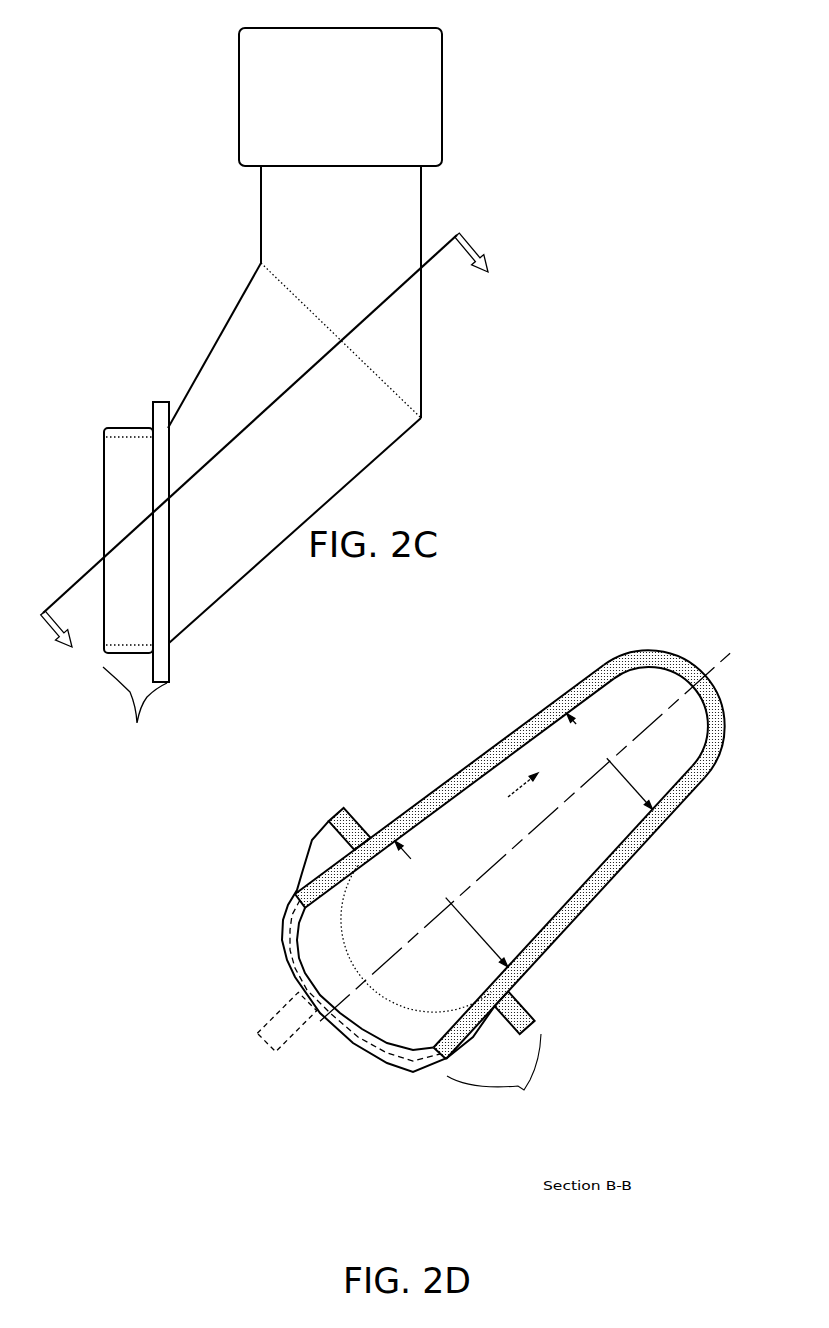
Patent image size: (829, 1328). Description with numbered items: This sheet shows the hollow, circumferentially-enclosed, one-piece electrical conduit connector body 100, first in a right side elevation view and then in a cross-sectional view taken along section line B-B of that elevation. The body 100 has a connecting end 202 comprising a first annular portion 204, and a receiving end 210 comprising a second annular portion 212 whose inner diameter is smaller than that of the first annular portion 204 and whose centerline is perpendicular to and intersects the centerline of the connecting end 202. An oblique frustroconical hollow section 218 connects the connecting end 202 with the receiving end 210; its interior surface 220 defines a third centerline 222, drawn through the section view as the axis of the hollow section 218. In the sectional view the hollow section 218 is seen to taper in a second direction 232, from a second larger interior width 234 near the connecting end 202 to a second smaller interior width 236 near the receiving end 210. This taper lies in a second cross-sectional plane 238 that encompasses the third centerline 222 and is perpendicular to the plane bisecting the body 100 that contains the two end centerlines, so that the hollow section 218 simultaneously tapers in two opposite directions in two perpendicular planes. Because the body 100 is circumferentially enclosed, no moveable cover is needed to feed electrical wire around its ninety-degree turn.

In FIG. 2C, the electrical conduit connector body 100 is at (622, 225).
In FIG. 2C, the second annular portion 212 is at (270, 72).
In FIG. 2C, the receiving end 210 is at (300, 222).
In FIG. 2D, the receiving end 210 is at (628, 648).
In FIG. 2C, the oblique frustroconical hollow section 218 is at (245, 360).
In FIG. 2D, the oblique frustroconical hollow section 218 is at (490, 753).
In FIG. 2C, the first annular portion 204 is at (128, 450).
In FIG. 2D, the first annular portion 204 is at (318, 876).
In FIG. 2C, the connecting end 202 is at (136, 578).
In FIG. 2D, the connecting end 202 is at (442, 966).
In FIG. 2D, the interior surface 220 is at (555, 883).
In FIG. 2D, the third centerline 222 is at (297, 1044).
In FIG. 2D, the second direction 232 is at (505, 798).
In FIG. 2D, the second larger interior width 234 is at (451, 904).
In FIG. 2D, the second smaller interior width 236 is at (609, 762).
In FIG. 2D, the second cross-sectional plane 238 is at (286, 1021).